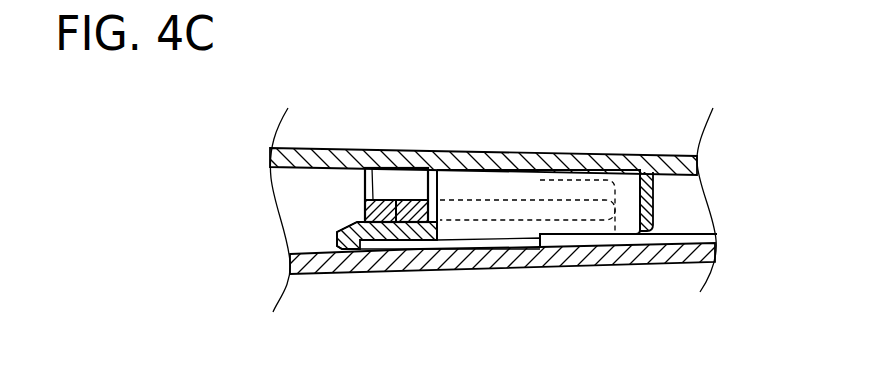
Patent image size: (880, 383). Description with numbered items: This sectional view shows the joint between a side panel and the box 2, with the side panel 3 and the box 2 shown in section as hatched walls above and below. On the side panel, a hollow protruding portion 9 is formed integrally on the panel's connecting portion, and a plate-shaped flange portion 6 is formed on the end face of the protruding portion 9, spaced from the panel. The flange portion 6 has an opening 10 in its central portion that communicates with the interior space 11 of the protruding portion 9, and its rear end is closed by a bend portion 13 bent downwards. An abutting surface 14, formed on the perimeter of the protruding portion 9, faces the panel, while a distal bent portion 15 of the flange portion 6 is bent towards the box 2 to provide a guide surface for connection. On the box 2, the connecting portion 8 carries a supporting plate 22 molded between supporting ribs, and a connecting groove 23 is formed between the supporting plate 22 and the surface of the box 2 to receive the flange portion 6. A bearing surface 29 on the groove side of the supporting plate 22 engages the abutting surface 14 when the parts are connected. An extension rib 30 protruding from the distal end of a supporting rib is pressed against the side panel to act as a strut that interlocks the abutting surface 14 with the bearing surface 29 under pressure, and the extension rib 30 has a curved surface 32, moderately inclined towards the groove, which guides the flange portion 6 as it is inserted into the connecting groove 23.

The box 2 is at (483, 272).
The right side panel 3 is at (553, 154).
The flange portion 6 is at (386, 232).
The connecting portion 8 is at (354, 195).
The protruding portion 9 is at (421, 188).
The opening 10 is at (541, 264).
The interior space 11 is at (630, 204).
The bend portion 13 is at (655, 192).
The abutting surface 14 is at (396, 218).
The distal bent portion 15 is at (337, 250).
The supporting plate 22 is at (374, 196).
The connecting groove 23 is at (413, 168).
The bearing surface 29 is at (462, 232).
The extension rib 30 is at (570, 192).
The curved surface 32 is at (603, 178).